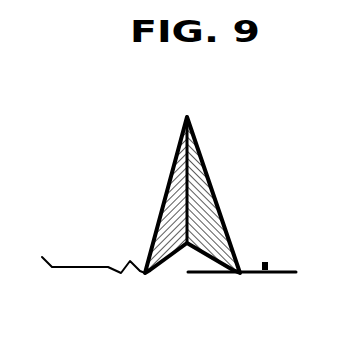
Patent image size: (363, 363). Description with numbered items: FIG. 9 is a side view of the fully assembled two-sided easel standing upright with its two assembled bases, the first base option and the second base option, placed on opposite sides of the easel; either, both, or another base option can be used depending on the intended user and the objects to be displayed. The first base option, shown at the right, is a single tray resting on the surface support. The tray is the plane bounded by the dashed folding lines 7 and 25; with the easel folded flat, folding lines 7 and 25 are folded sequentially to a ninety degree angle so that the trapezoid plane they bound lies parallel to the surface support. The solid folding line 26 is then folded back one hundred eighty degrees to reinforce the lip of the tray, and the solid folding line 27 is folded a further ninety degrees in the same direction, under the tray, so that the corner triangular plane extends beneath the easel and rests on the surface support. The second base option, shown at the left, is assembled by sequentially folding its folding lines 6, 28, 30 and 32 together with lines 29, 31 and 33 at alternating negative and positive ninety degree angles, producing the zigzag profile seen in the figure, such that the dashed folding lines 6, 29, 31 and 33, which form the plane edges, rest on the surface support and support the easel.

The folding line 6 is at (130, 223).
The folding line 7 is at (252, 226).
The folding line 25 is at (282, 222).
The folding line 26 is at (295, 251).
The folding line 27 is at (305, 290).
The folding line 28 is at (96, 228).
The folding line 29 is at (129, 298).
The folding line 30 is at (61, 233).
The folding line 31 is at (91, 298).
The folding line 32 is at (36, 238).
The folding line 33 is at (51, 298).